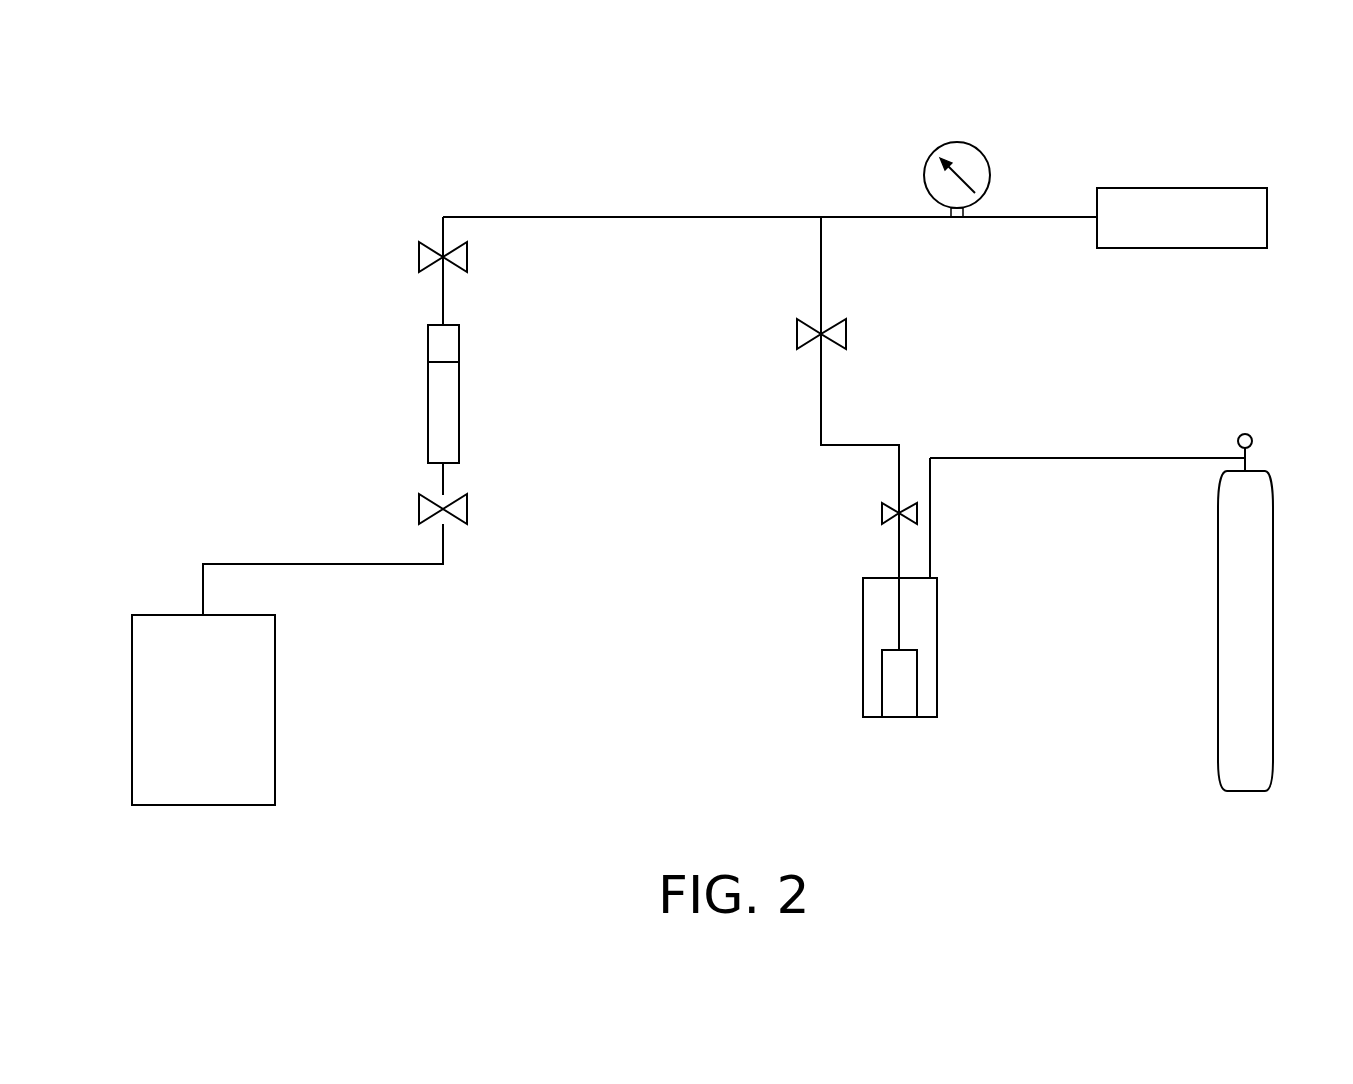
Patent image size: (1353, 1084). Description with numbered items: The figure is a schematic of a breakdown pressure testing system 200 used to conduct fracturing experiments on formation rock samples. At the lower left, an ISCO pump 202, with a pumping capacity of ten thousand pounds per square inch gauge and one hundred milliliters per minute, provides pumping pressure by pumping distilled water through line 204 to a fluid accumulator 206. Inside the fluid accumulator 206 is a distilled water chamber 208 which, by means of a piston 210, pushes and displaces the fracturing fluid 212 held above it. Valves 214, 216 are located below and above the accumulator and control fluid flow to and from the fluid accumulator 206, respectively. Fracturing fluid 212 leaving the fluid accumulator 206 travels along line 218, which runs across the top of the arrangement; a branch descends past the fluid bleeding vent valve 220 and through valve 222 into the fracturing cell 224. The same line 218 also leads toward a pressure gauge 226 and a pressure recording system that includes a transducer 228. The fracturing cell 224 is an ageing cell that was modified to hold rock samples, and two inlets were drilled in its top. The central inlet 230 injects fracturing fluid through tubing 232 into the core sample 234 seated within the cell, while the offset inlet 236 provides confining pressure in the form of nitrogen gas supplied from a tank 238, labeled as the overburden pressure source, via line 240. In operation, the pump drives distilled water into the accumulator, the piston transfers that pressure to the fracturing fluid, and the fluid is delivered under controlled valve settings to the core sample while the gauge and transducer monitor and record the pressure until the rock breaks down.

The breakdown pressure testing system 200 is at (227, 110).
The ISCO pump 202 is at (238, 805).
The line 204 is at (330, 564).
The fluid accumulator 206 is at (459, 437).
The distilled water chamber 208 is at (432, 421).
The piston 210 is at (437, 363).
The fracturing fluid 212 is at (437, 339).
The valve 214 is at (467, 509).
The valve 216 is at (467, 258).
The line 218 is at (644, 217).
The fluid bleeding vent valve 220 is at (797, 334).
The valve 222 is at (882, 514).
The fracturing cell 224 is at (927, 717).
The pressure gauge 226 is at (925, 172).
The transducer 228 is at (1208, 230).
The central inlet 230 is at (899, 562).
The tubing 232 is at (899, 607).
The core sample 234 is at (882, 683).
The offset inlet 236 is at (930, 545).
The tank 238 is at (1228, 733).
The line 240 is at (1010, 458).